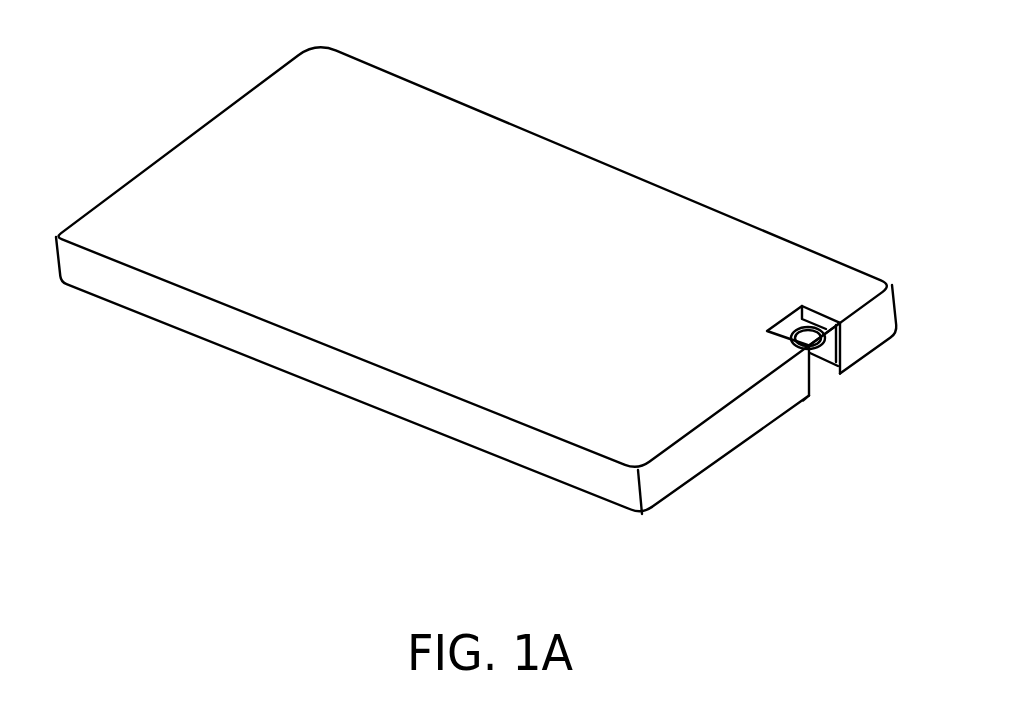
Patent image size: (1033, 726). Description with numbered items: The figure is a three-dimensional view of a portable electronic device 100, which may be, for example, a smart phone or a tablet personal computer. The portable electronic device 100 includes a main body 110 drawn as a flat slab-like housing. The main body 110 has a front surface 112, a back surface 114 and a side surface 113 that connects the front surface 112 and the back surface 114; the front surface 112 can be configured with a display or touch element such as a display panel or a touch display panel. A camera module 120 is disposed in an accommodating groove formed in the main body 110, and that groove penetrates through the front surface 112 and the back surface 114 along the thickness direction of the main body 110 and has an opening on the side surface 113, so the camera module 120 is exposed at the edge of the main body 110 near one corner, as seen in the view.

The portable electronic device 100 is at (476, 306).
The main body 110 is at (476, 313).
The front surface 112 is at (524, 482).
The side surface 113 is at (708, 454).
The back surface 114 is at (607, 215).
The camera module 120 is at (824, 390).